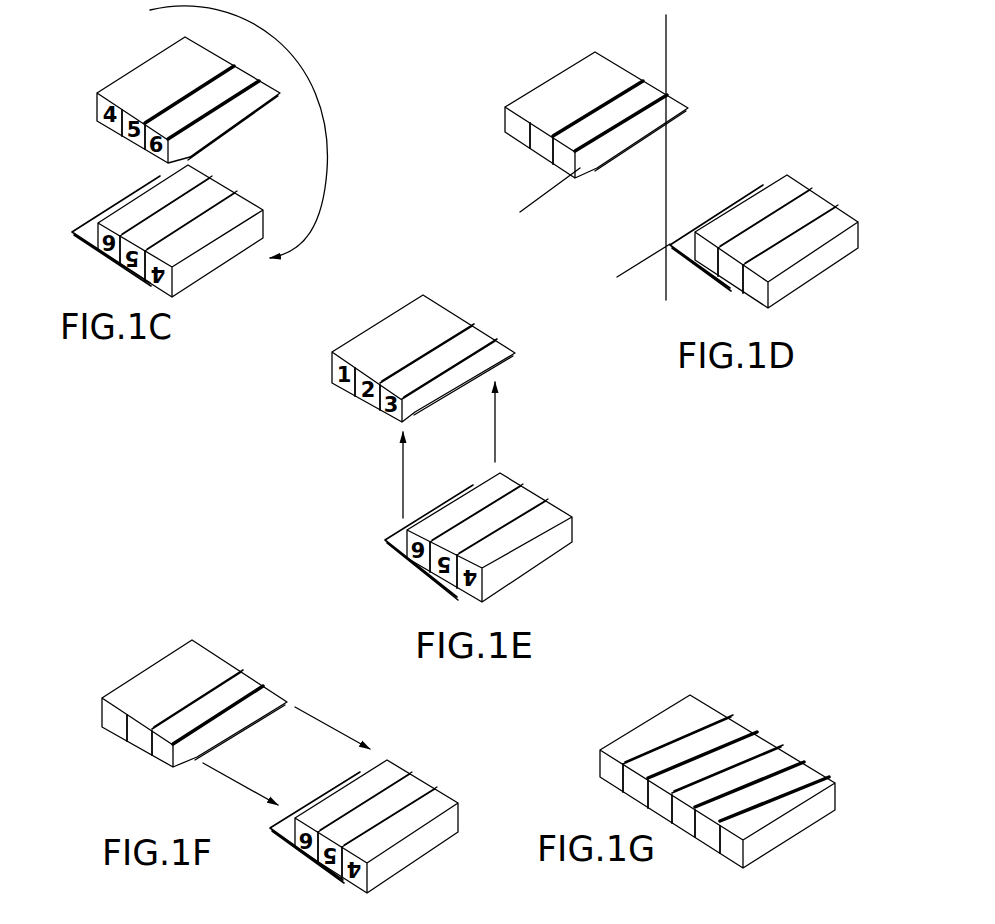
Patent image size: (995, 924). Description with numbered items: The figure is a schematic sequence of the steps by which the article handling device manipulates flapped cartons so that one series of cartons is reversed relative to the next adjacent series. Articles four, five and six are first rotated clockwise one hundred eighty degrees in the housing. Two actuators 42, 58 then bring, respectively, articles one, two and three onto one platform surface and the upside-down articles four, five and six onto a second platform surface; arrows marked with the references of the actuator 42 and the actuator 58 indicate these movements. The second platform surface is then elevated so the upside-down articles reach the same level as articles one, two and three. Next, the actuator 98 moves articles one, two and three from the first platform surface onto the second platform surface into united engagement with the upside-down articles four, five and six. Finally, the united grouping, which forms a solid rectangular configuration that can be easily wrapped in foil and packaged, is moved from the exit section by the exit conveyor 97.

In FIG. 1D, the actuator 42 is at (540, 160).
In FIG. 1D, the actuator 58 is at (724, 287).
In FIG. 1G, the exit conveyor 97 is at (788, 827).
In FIG. 1F, the actuator 98 is at (35, 605).